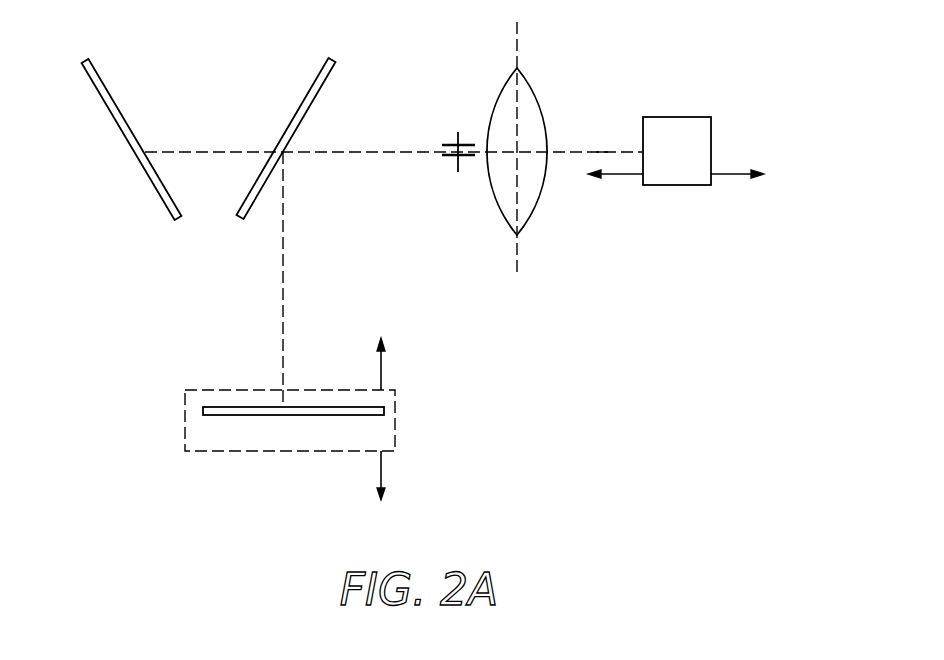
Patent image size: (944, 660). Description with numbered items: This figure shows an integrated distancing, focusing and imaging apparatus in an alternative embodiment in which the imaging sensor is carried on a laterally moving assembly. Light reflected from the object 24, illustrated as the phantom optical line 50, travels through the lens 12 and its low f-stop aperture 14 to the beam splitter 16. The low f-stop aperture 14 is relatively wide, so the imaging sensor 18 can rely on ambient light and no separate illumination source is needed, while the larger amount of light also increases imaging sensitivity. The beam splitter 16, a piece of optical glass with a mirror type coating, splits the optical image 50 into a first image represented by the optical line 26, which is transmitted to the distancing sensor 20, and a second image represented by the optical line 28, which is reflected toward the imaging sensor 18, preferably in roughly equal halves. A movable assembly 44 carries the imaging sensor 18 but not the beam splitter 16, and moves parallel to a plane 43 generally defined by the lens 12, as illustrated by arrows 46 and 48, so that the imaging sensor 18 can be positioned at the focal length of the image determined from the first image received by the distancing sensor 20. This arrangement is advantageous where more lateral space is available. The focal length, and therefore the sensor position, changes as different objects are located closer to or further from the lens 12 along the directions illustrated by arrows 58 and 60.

The lens assembly 12 is at (535, 93).
The low f-stop aperture 14 is at (457, 138).
The beam splitter 16 is at (313, 82).
The imaging sensor 18 is at (212, 417).
The distancing sensor 20 is at (103, 82).
The object 24 is at (675, 117).
The first image optical line 26 is at (191, 144).
The second image optical line 28 is at (288, 239).
The plane 43 is at (518, 156).
The movable assembly 44 is at (397, 415).
The movement arrow 46 is at (380, 493).
The movement arrow 48 is at (380, 349).
The phantom optical line 50 is at (597, 149).
The object distance arrow 58 is at (598, 174).
The object distance arrow 60 is at (755, 174).